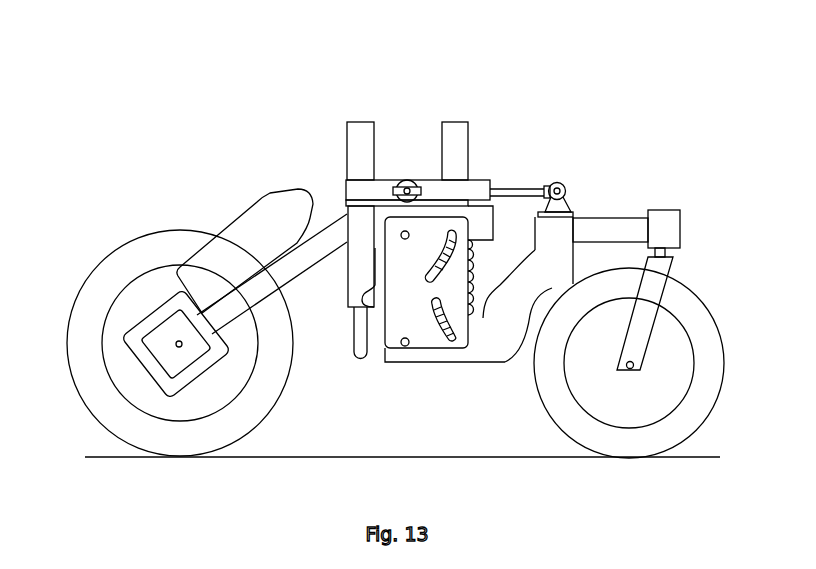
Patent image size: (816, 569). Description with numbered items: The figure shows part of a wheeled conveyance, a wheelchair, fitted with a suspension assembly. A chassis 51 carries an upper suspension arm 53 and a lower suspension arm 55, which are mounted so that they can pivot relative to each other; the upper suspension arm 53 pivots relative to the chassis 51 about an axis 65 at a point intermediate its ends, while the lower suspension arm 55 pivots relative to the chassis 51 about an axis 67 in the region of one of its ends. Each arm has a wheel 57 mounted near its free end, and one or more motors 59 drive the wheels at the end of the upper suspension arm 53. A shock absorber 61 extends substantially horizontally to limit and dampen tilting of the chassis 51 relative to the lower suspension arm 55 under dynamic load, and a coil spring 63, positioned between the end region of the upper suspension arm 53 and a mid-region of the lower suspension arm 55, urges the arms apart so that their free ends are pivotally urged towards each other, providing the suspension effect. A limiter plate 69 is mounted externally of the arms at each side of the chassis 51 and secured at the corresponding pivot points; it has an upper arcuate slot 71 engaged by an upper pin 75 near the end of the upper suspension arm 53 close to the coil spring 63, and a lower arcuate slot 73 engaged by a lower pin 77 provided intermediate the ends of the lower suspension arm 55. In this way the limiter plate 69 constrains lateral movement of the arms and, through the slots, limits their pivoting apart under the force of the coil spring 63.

The chassis 51 is at (362, 122).
The upper suspension arm 53 is at (328, 226).
The lower suspension arm 55 is at (557, 232).
The wheel 57 is at (123, 243).
The motor 59 is at (257, 202).
The shock absorber 61 is at (457, 210).
The coil spring 63 is at (480, 267).
The axis 65 is at (404, 232).
The axis 67 is at (404, 347).
The limiter plate 69 is at (354, 326).
The upper arcuate slot 71 is at (549, 180).
The lower arcuate slot 73 is at (442, 328).
The upper pin 75 is at (472, 248).
The lower pin 77 is at (452, 346).